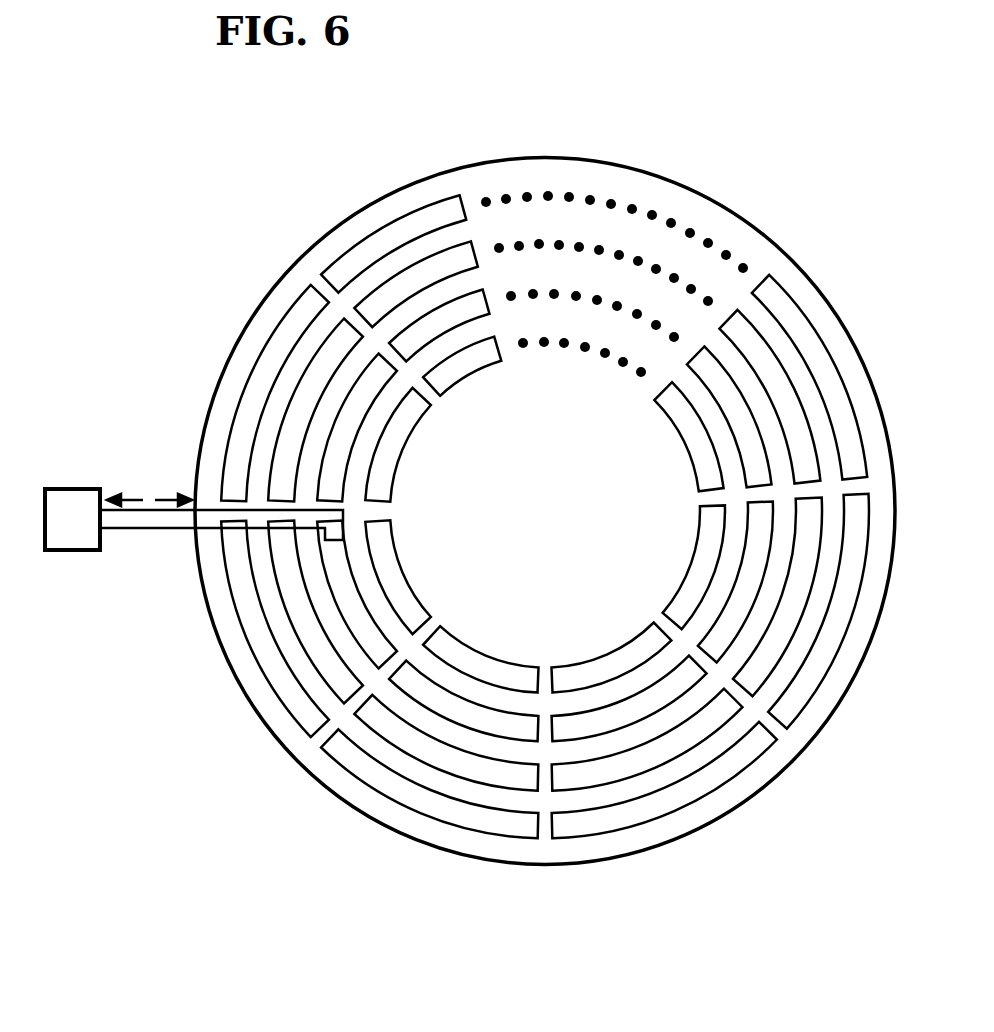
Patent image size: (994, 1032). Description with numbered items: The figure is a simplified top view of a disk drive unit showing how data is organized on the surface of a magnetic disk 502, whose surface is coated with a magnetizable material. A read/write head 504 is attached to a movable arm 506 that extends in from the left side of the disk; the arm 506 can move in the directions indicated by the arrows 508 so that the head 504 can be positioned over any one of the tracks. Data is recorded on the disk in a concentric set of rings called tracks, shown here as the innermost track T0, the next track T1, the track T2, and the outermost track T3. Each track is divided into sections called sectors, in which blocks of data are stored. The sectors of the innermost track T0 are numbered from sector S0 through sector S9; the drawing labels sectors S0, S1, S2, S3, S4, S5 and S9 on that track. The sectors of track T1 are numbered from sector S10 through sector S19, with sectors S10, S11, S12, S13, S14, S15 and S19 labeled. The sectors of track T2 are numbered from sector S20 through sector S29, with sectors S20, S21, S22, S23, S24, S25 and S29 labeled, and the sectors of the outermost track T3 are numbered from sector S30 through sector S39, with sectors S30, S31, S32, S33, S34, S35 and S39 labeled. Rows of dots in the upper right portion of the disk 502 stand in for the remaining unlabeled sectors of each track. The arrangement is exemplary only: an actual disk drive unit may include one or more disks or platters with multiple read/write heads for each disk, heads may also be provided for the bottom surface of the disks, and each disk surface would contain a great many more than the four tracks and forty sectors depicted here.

The magnetic disk 502 is at (690, 190).
The read/write head 504 is at (348, 528).
The movable arm 506 is at (148, 527).
The arrows 508 is at (168, 493).
The track T0 is at (452, 387).
The track T1 is at (707, 397).
The track T2 is at (298, 373).
The track T3 is at (377, 220).
The sector S0 is at (705, 577).
The sector S1 is at (647, 645).
The sector S2 is at (480, 667).
The sector S3 is at (385, 562).
The sector S4 is at (383, 483).
The sector S5 is at (460, 367).
The sector S9 is at (712, 477).
The sector S10 is at (758, 518).
The sector S11 is at (630, 708).
The sector S12 is at (413, 677).
The sector S13 is at (357, 605).
The sector S14 is at (350, 430).
The sector S15 is at (450, 320).
The sector S19 is at (740, 437).
The sector S20 is at (763, 670).
The sector S21 is at (683, 745).
The sector S22 is at (482, 773).
The sector S23 is at (317, 652).
The sector S24 is at (293, 417).
The sector S25 is at (372, 303).
The sector S29 is at (770, 370).
The sector S30 is at (825, 655).
The sector S31 is at (647, 813).
The sector S32 is at (353, 760).
The sector S33 is at (250, 618).
The sector S34 is at (298, 313).
The sector S35 is at (440, 212).
The sector S39 is at (772, 293).